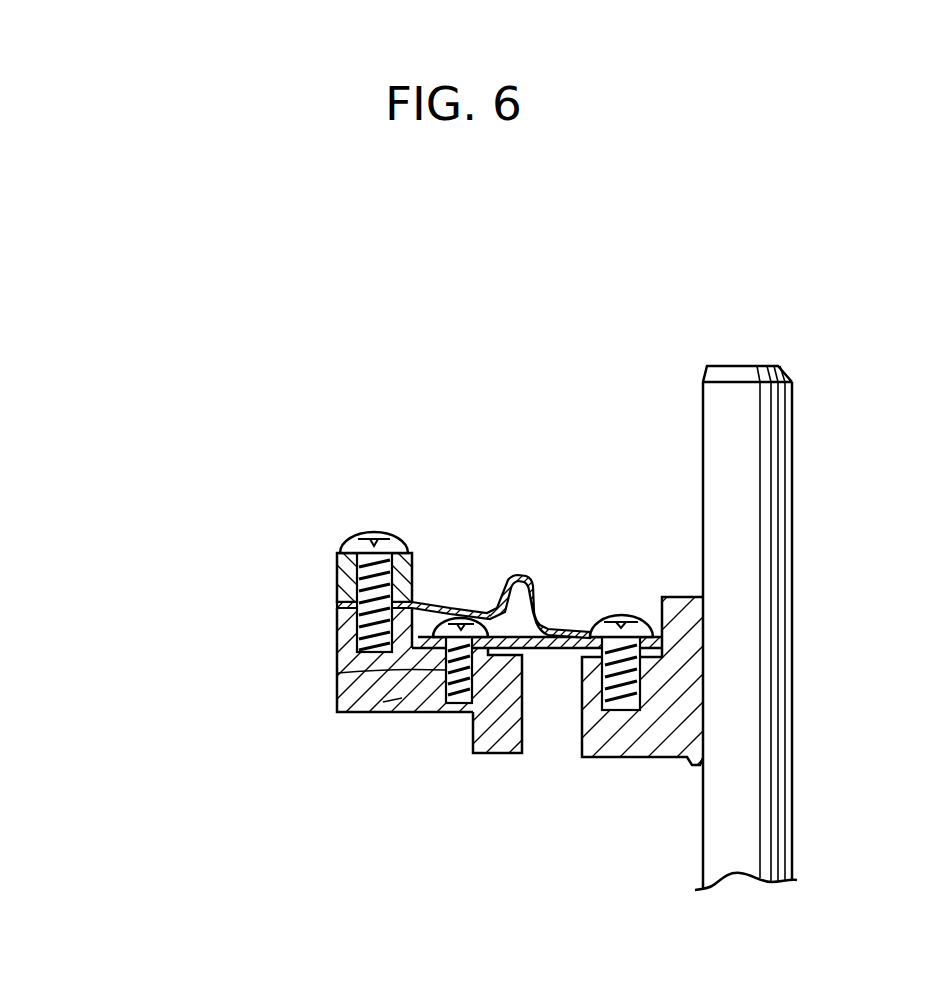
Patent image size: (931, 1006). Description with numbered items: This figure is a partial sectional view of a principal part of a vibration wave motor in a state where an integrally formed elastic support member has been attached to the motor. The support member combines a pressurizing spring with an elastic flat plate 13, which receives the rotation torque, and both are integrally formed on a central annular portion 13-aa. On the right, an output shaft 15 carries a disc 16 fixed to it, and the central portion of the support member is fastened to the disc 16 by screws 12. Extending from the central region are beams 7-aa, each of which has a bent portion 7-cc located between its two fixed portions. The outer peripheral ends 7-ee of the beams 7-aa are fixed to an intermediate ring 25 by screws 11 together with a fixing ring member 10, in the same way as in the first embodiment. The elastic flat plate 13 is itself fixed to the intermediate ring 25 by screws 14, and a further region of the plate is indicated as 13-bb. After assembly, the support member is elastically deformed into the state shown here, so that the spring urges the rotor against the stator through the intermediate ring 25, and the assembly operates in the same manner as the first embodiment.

The beam 7-aa is at (443, 602).
The bent portion 7-cc is at (520, 573).
The outer peripheral end 7-ee is at (337, 605).
The fixing ring member 10 is at (337, 580).
The screw 11 is at (347, 533).
The screw 12 is at (620, 615).
The elastic flat plate 13 is at (547, 650).
The central annular portion 13-aa is at (575, 655).
The left leg of mounting bracket 13-bb is at (485, 655).
The screw 14 is at (347, 680).
The output shaft 15 is at (728, 453).
The disc 16 is at (677, 607).
The intermediate ring 25 is at (373, 712).